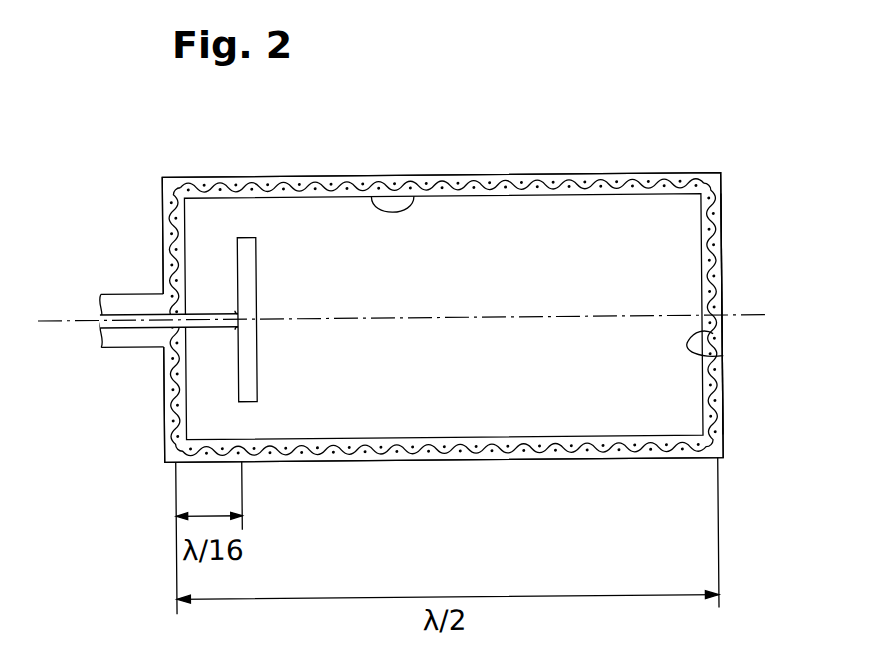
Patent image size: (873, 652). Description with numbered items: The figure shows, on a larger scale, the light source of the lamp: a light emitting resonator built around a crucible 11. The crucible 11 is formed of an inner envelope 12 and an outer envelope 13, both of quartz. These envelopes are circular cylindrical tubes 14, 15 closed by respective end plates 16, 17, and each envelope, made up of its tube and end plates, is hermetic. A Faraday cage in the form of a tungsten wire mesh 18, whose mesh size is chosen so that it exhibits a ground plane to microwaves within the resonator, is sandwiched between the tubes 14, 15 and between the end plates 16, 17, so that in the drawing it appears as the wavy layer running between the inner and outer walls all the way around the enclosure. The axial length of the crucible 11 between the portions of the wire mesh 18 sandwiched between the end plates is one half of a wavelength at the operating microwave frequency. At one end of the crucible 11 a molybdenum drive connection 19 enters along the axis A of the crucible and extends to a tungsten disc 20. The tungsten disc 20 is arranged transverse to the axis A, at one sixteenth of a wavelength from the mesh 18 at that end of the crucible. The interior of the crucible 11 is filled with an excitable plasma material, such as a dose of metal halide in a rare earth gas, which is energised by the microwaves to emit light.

The crucible 11 is at (484, 150).
The inner envelope 12 is at (588, 192).
The outer envelope 13 is at (546, 174).
The circular cylindrical tube 14 is at (372, 196).
The circular cylindrical tube 15 is at (322, 176).
The end plate 16 is at (723, 358).
The end plate 17 is at (722, 292).
The tungsten wire mesh 18 is at (724, 241).
The molybdenum drive connection 19 is at (210, 325).
The tungsten disc 20 is at (247, 381).
The axis A is at (57, 314).